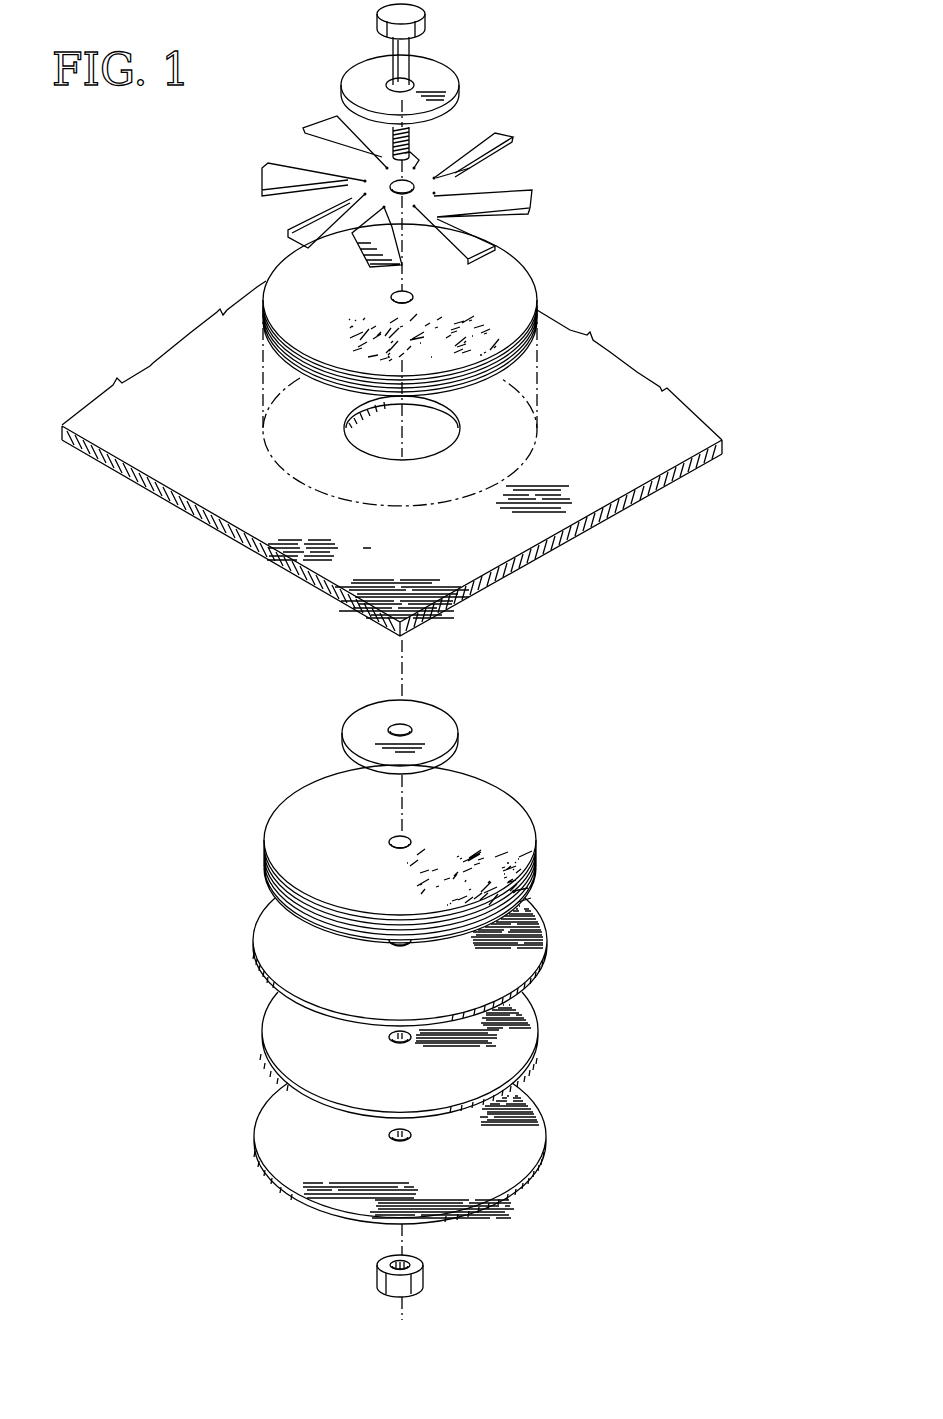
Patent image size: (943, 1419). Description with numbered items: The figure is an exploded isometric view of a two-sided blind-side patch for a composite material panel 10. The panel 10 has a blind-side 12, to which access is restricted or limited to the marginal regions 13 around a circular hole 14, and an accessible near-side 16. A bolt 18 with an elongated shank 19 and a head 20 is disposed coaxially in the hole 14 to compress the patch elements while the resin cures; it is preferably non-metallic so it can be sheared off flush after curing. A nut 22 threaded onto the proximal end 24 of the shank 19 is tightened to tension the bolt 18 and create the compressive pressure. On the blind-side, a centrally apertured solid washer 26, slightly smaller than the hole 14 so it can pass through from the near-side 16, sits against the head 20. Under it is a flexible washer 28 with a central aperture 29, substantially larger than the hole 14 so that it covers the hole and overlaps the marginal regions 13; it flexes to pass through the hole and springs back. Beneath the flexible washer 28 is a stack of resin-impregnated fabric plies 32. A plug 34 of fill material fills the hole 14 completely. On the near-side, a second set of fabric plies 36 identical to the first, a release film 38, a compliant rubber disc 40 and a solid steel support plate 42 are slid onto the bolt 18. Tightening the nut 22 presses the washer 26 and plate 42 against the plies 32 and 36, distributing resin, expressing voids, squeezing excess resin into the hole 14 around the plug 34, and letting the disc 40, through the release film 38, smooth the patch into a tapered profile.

The composite material panel 10 is at (392, 660).
The blind-side 12 is at (392, 482).
The marginal regions 13 is at (316, 444).
The circular opening or hole 14 is at (458, 416).
The near-side 16 is at (463, 605).
The bolt 18 is at (408, 80).
The elongated shank 19 is at (408, 58).
The head 20 is at (420, 8).
The nut 22 is at (383, 1273).
The proximal end 24 is at (441, 184).
The solid washer 26 is at (459, 76).
The flexible washer 28 is at (533, 191).
The central aperture 29 is at (436, 178).
The fabric plies 32 is at (510, 272).
The plug 34 is at (350, 722).
The second set of fabric plies 36 is at (292, 824).
The release film 38 is at (273, 950).
The disc of compliant material 40 is at (282, 1047).
The support plate 42 is at (273, 1148).